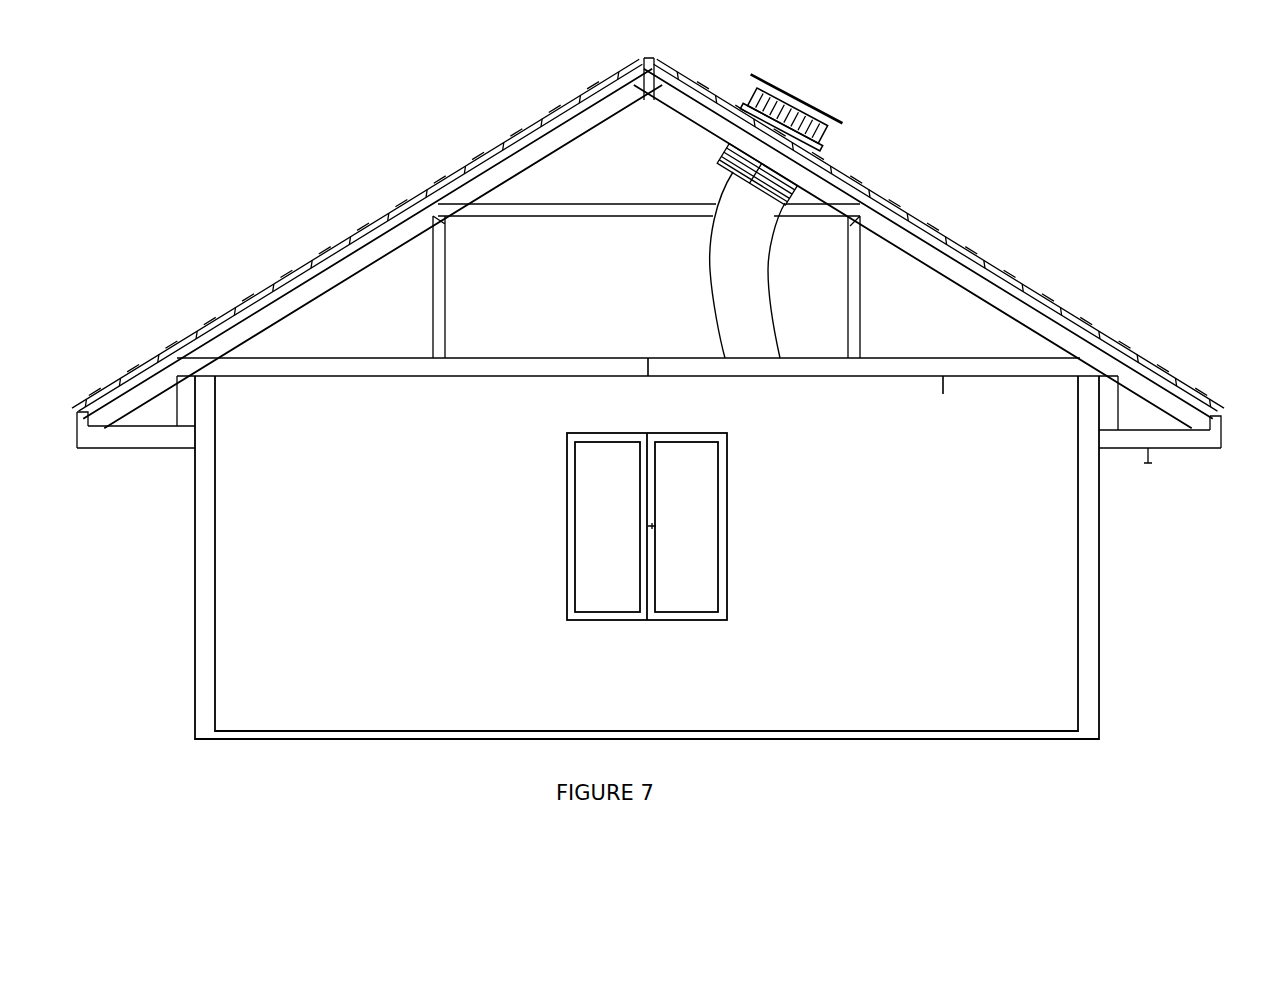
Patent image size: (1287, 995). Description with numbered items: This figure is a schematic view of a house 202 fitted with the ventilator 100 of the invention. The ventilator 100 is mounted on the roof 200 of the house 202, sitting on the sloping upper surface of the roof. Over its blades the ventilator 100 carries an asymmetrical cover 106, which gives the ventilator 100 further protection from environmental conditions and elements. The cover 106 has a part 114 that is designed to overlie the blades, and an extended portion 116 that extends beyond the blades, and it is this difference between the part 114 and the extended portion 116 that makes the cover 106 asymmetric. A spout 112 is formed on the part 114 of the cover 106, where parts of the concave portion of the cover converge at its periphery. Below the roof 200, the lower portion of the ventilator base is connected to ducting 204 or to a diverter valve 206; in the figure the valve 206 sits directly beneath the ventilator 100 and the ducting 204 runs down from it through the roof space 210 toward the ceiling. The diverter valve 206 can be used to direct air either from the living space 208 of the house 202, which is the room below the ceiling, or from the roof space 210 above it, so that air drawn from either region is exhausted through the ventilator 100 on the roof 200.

The ventilator 100 is at (876, 140).
The cover 106 is at (815, 72).
The spout 112 is at (834, 98).
The part of the cover 114 is at (830, 81).
The extended portion 116 is at (810, 61).
The roof 200 is at (905, 218).
The house 202 is at (1160, 566).
The ducting 204 is at (718, 290).
The diverter valve 206 is at (728, 158).
The living space 208 is at (528, 502).
The roof space 210 is at (598, 197).